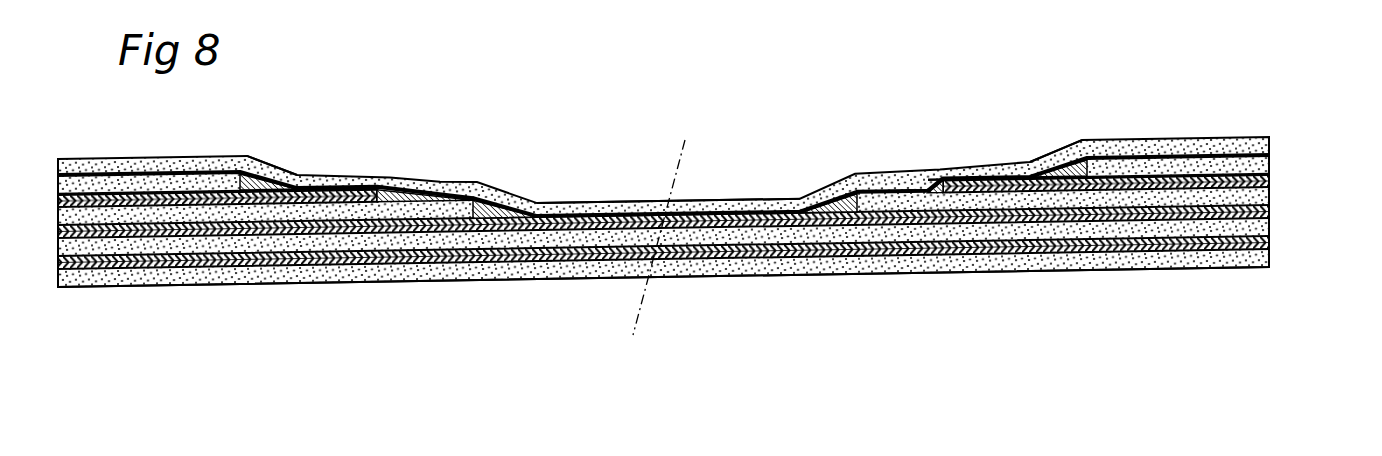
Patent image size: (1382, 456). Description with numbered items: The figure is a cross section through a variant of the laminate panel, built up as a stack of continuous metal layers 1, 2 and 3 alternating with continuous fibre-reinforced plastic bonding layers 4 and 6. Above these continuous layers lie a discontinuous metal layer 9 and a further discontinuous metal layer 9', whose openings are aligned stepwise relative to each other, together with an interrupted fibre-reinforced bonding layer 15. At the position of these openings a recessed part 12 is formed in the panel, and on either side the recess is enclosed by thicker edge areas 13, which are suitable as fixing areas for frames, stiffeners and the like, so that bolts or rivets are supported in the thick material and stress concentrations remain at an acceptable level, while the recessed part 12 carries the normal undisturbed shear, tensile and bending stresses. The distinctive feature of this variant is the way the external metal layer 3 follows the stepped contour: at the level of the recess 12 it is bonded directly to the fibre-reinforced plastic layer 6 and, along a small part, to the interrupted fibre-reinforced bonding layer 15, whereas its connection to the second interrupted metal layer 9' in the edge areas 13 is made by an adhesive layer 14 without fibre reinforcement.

The continuous metal layer 1 is at (1252, 260).
The continuous metal layer 2 is at (1268, 213).
The external metal layer 3 is at (1268, 142).
The fibre-reinforced plastic bonding layer 4 is at (1262, 228).
The fibre-reinforced plastic bonding layer 6 is at (1262, 193).
The discontinuous metal layer 9 is at (709, 193).
The further discontinuous metal layer 9' is at (712, 167).
The recessed part 12 is at (728, 192).
The thicker edge area 13 is at (275, 163).
The adhesive layer 14 is at (1268, 155).
The interrupted fibre-reinforced bonding layer 15 is at (1268, 175).